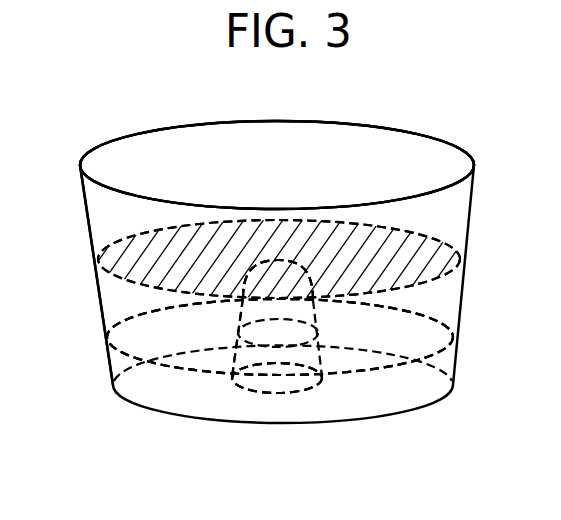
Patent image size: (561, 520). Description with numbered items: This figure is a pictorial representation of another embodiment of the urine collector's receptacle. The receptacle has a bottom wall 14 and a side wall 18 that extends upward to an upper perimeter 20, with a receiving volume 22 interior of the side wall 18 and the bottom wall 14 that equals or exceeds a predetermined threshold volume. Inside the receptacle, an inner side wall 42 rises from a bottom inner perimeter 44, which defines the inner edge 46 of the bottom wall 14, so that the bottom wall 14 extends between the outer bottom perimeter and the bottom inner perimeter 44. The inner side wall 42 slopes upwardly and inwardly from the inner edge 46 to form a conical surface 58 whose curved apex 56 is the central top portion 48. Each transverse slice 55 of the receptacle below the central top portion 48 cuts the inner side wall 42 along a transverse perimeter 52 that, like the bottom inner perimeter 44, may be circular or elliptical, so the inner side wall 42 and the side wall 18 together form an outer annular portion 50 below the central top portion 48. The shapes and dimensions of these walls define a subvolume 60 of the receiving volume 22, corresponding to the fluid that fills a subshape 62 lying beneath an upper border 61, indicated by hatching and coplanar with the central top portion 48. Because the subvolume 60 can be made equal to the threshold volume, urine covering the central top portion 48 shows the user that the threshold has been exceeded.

The bottom wall 14 is at (205, 398).
The side wall 18 is at (83, 213).
The upper perimeter 20 is at (450, 150).
The receiving volume 22 is at (175, 148).
The inner side wall 42 is at (313, 313).
The bottom inner perimeter 44 is at (304, 393).
The inner edge 46 is at (322, 377).
The central top portion 48 is at (305, 267).
The outer annular portion 50 is at (162, 297).
The transverse perimeter 52 is at (237, 335).
The transverse slice 55 is at (414, 338).
The curved apex 56 is at (278, 262).
The conical surface 58 is at (313, 300).
The subvolume 60 is at (447, 296).
The upper border 61 is at (137, 235).
The subshape 62 is at (121, 307).